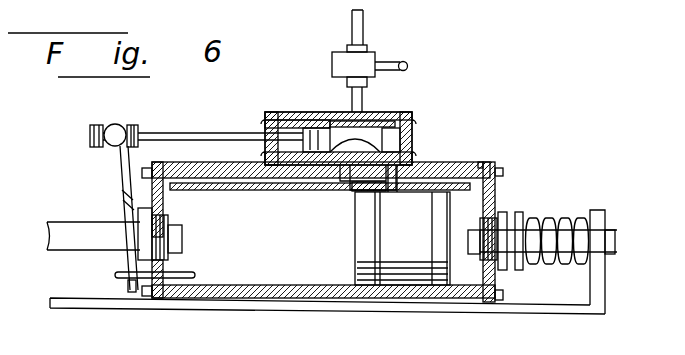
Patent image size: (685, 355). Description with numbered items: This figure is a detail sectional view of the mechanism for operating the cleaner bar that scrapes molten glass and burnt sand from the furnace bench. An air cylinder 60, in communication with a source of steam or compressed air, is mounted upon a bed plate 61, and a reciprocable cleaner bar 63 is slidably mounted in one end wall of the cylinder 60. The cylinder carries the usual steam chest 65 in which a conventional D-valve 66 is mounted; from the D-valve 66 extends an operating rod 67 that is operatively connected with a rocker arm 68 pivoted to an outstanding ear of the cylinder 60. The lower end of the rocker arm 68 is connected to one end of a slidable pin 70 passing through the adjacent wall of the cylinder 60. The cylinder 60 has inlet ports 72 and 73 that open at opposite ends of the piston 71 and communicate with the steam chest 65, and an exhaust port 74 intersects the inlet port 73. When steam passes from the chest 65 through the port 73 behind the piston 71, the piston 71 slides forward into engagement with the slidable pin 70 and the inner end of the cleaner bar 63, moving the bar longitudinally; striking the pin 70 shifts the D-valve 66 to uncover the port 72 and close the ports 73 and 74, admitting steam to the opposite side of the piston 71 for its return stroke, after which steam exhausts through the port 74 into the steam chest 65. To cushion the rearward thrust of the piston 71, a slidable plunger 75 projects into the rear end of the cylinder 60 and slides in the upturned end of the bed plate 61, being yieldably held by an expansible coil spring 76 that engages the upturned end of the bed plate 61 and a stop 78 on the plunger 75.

The air cylinder 60 is at (455, 162).
The bed plate 61 is at (400, 299).
The cleaner bar 63 is at (52, 226).
The steam chest 65 is at (412, 118).
The D-valve 66 is at (378, 113).
The operating rod 67 is at (210, 130).
The rocker arm 68 is at (117, 165).
The slidable pin 70 is at (192, 275).
The piston 71 is at (470, 163).
The inlet port 72 is at (302, 183).
The inlet port 73 is at (420, 218).
The exhaust port 74 is at (357, 200).
The slidable plunger 75 is at (562, 228).
The expansible coil spring 76 is at (560, 228).
The stop 78 is at (518, 218).